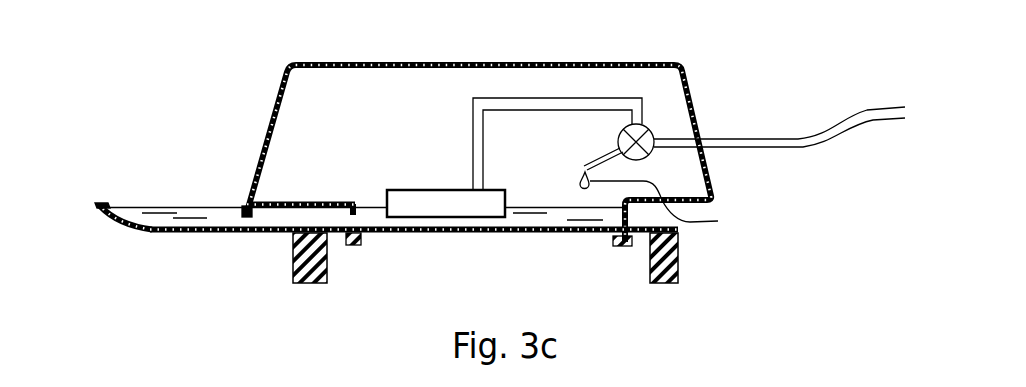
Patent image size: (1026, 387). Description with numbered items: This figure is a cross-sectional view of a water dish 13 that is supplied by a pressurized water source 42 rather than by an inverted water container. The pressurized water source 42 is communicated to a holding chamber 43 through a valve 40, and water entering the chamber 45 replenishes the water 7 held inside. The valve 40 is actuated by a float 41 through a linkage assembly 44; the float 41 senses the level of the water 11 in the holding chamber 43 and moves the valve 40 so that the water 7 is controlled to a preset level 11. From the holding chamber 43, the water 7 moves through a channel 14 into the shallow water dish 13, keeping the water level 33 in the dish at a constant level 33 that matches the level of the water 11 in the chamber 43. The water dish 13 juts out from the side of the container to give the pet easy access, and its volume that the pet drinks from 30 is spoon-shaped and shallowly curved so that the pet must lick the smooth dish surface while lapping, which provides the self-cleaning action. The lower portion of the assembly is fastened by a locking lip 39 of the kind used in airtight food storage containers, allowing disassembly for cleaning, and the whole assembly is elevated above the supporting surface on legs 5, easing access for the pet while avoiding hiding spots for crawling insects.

The legs 5 is at (328, 267).
The water 7 is at (520, 217).
The water level in the holding chamber 11 is at (372, 207).
The water dish 13 is at (168, 237).
The channel 14 is at (343, 222).
The volume that the pet drinks from 30 is at (137, 215).
The water level in the water dish 33 is at (153, 207).
The locking lip 39 is at (612, 240).
The valve 40 is at (650, 137).
The float 41 is at (435, 189).
The pressurized water source 42 is at (772, 149).
The holding chamber 43 is at (457, 104).
The linkage assembly 44 is at (560, 103).
The chamber inlet 45 is at (675, 204).